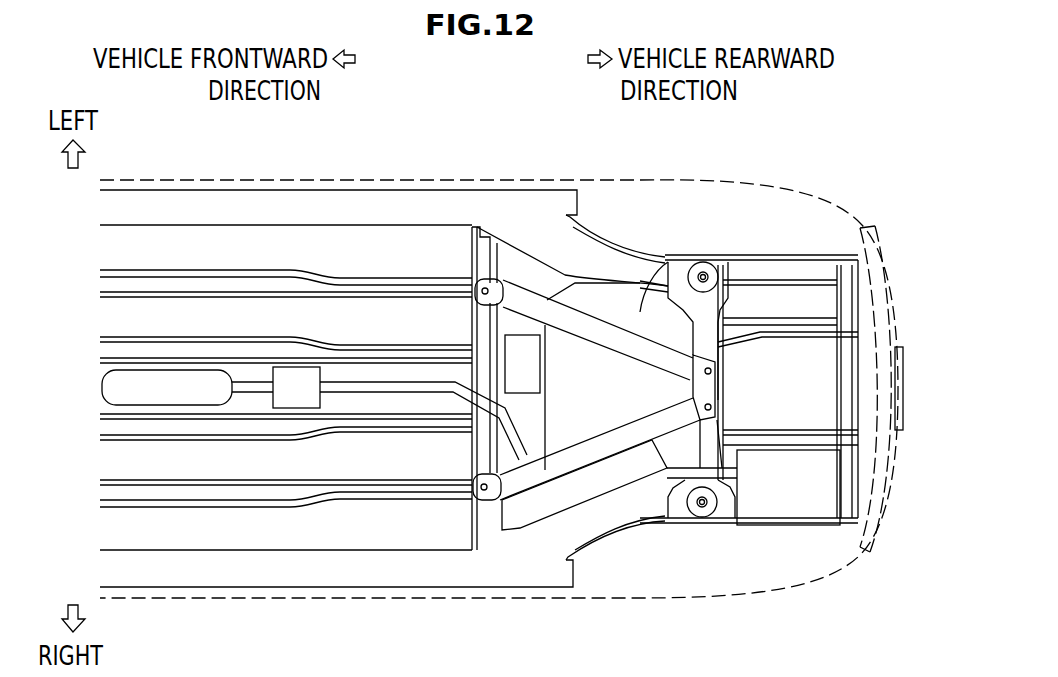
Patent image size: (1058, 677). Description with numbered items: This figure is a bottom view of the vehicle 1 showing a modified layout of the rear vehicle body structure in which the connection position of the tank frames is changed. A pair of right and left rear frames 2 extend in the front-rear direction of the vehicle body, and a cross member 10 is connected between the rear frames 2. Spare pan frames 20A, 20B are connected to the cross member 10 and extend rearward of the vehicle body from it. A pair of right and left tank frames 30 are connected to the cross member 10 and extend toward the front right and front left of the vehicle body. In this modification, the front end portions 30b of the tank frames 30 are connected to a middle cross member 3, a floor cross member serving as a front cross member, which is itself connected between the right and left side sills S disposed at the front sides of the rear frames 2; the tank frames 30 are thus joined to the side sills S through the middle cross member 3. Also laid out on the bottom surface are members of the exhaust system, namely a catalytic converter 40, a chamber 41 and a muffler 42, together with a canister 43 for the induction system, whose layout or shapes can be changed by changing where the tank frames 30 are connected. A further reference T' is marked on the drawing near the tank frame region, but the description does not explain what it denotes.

The vehicle 1 is at (199, 163).
The rear frame 2 is at (623, 267).
The middle cross member 3 is at (475, 440).
The cross member 10 is at (720, 265).
The spare pan frame 20A is at (787, 327).
The spare pan frame 20B is at (760, 437).
The tank frame 30 is at (533, 303).
The front end portion 30b is at (485, 278).
The catalytic converter 40 is at (122, 388).
The chamber 41 is at (560, 497).
The muffler 42 is at (813, 502).
The canister 43 is at (513, 353).
The side sill S is at (548, 207).
The reference point T' is at (685, 220).